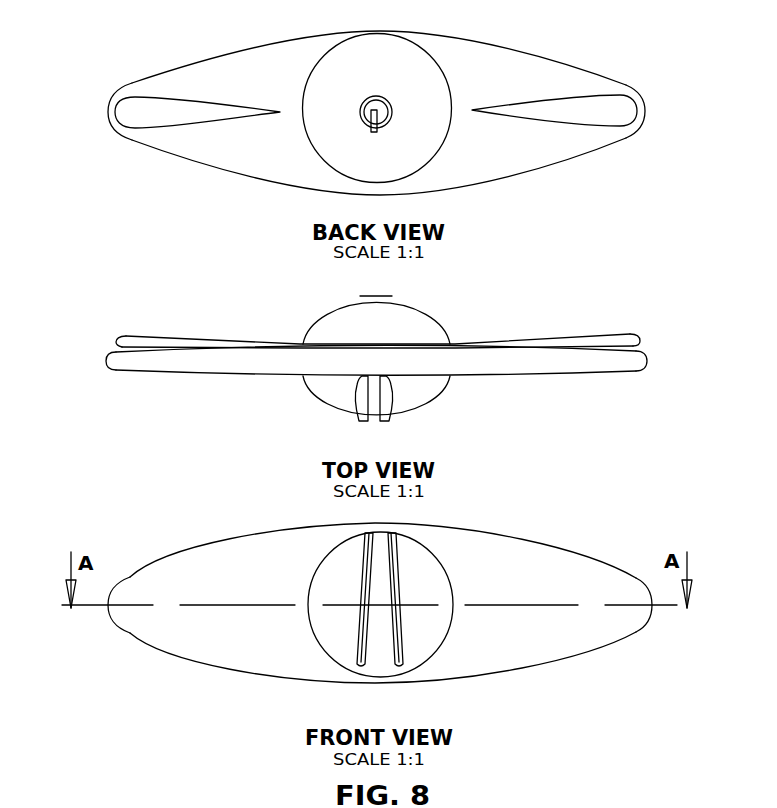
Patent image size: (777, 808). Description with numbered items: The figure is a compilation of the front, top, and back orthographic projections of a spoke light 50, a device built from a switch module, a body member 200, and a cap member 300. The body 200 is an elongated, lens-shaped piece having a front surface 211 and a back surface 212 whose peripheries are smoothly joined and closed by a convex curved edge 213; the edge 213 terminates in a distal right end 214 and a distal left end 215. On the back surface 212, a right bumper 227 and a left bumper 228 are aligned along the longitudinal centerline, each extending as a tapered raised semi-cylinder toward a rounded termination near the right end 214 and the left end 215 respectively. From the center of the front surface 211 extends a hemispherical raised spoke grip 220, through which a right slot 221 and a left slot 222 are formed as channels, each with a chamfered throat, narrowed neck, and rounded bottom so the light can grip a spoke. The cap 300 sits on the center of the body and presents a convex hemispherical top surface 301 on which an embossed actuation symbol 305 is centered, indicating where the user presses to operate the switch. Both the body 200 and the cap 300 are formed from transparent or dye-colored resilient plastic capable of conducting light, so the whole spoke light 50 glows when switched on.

The spoke light 50 is at (112, 53).
The body member 200 is at (540, 34).
The front surface 211 is at (288, 376).
The back surface 212 is at (506, 85).
The convex curved edge 213 is at (272, 186).
The distal right end 214 is at (108, 113).
The distal left end 215 is at (648, 110).
The spoke grip 220 is at (437, 404).
The right slot 221 is at (400, 425).
The left slot 222 is at (350, 425).
The right bumper 227 is at (183, 115).
The left bumper 228 is at (570, 115).
The cap member 300 is at (349, 38).
The convex hemispherical top surface 301 is at (414, 84).
The embossed actuation symbol 305 is at (383, 128).